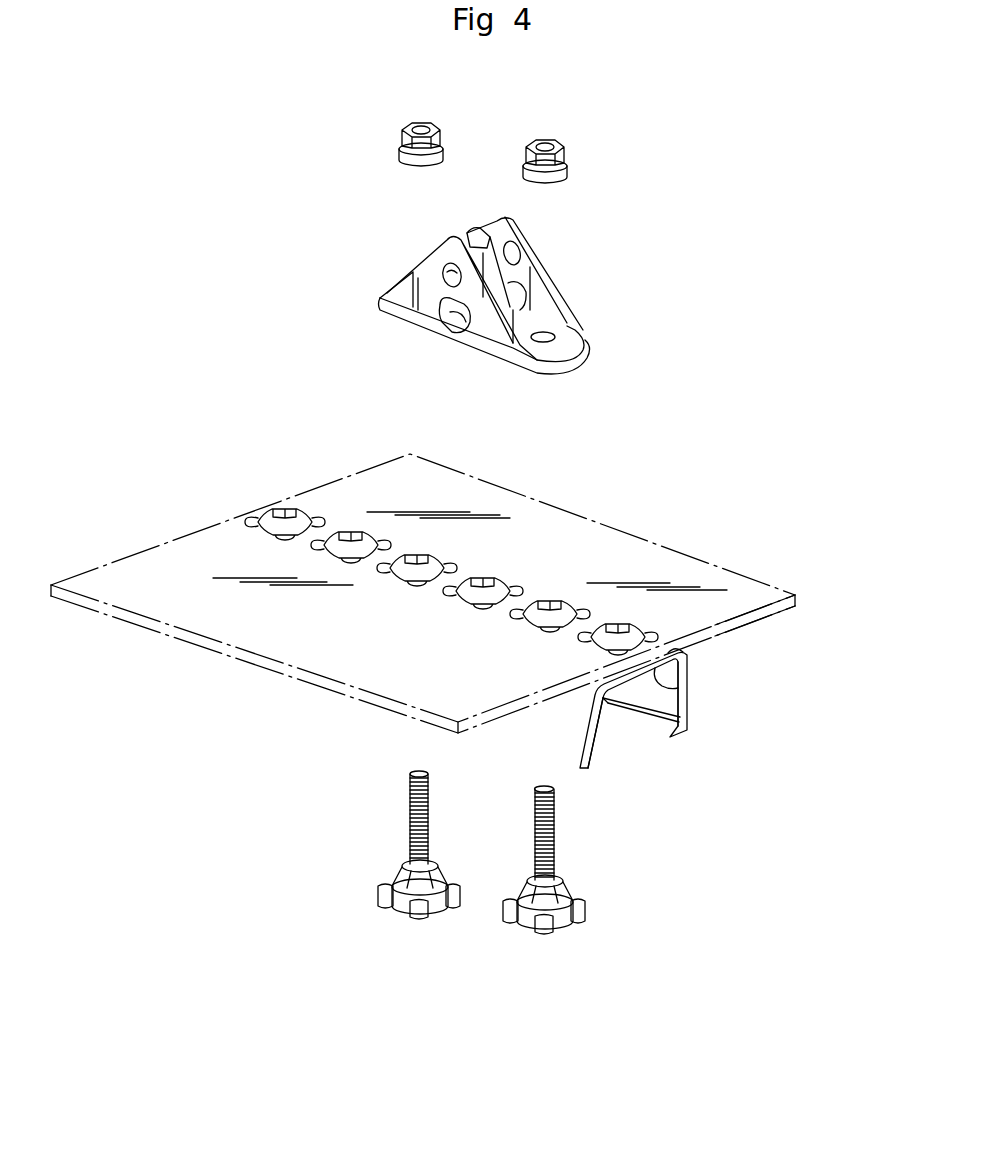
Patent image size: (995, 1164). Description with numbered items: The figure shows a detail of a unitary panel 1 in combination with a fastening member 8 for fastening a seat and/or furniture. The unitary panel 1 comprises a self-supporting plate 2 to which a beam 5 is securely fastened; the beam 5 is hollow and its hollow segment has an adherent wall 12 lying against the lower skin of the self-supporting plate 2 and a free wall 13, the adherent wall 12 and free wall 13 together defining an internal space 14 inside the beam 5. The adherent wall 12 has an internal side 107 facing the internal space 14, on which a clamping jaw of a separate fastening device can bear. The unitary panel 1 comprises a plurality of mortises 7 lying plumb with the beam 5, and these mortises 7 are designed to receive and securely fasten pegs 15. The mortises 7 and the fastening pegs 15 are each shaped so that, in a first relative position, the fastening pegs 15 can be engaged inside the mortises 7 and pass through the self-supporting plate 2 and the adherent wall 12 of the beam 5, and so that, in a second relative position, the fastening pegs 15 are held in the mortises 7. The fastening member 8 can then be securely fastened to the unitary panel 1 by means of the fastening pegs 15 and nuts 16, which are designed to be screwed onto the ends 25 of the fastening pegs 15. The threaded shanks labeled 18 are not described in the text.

The unitary panel 1 is at (660, 548).
The self-supporting plate 2 is at (743, 622).
The beam 5 is at (687, 710).
The mortises 7 is at (347, 542).
The fastening member 8 is at (577, 330).
The adherent wall 12 is at (668, 664).
The free wall 13 is at (632, 745).
The internal space 14 is at (620, 717).
The fastening pegs 15 is at (520, 923).
The nuts 16 is at (438, 128).
The threaded bolt 18 is at (405, 793).
The ends of the fastening pegs 25 is at (408, 773).
The internal side of the adherent wall 107 is at (680, 694).